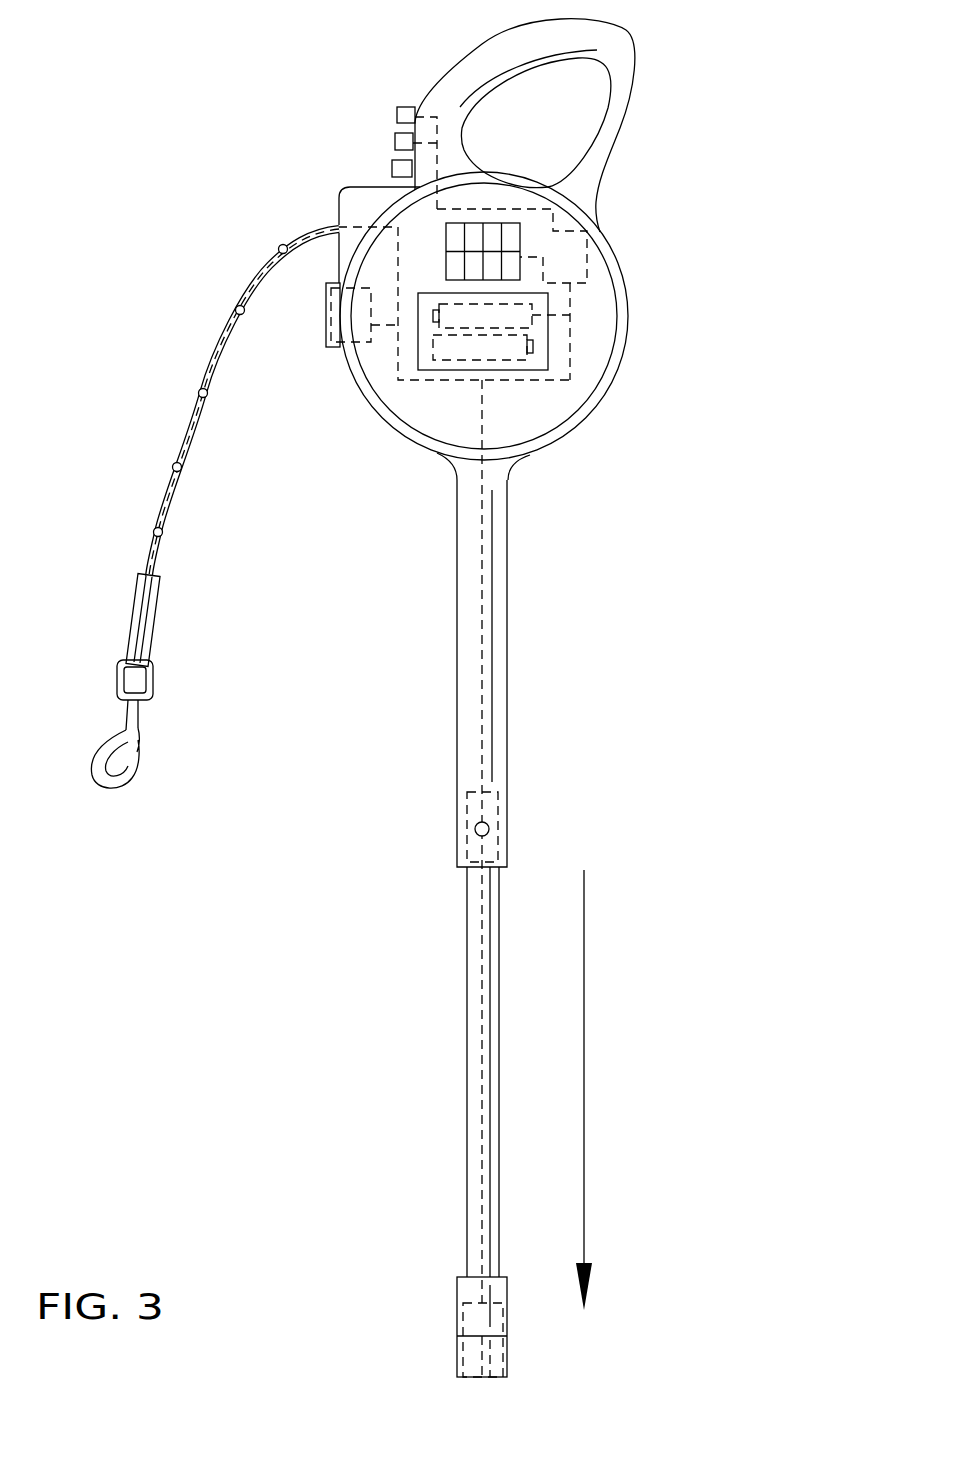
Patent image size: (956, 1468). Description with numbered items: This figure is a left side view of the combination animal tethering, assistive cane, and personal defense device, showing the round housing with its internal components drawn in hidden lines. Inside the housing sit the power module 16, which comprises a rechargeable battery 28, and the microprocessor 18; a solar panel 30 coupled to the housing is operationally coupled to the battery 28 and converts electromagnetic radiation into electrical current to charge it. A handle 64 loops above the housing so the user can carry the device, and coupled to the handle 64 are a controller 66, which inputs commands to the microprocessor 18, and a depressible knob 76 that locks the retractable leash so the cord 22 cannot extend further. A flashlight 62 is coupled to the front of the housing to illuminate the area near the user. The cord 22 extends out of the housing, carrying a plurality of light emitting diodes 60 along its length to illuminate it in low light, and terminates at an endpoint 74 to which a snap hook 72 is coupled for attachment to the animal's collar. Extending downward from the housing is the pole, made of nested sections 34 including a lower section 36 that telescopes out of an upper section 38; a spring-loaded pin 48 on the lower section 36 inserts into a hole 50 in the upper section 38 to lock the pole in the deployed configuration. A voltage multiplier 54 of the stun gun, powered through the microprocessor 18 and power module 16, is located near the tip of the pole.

The power module 16 is at (435, 362).
The microprocessor 18 is at (570, 242).
The cord 22 is at (198, 432).
The battery 28 is at (482, 362).
The solar panel 30 is at (512, 265).
The nested sections 34 is at (447, 879).
The lower section 36 is at (466, 1122).
The upper section 38 is at (510, 698).
The pin 48 is at (492, 826).
The hole 50 is at (480, 828).
The voltage multiplier 54 is at (485, 1320).
The light emitting diodes 60 is at (230, 310).
The flashlight 62 is at (323, 317).
The handle 64 is at (487, 64).
The controller 66 is at (395, 112).
The snap hook 72 is at (137, 722).
The endpoint 74 is at (137, 667).
The knob 76 is at (390, 168).